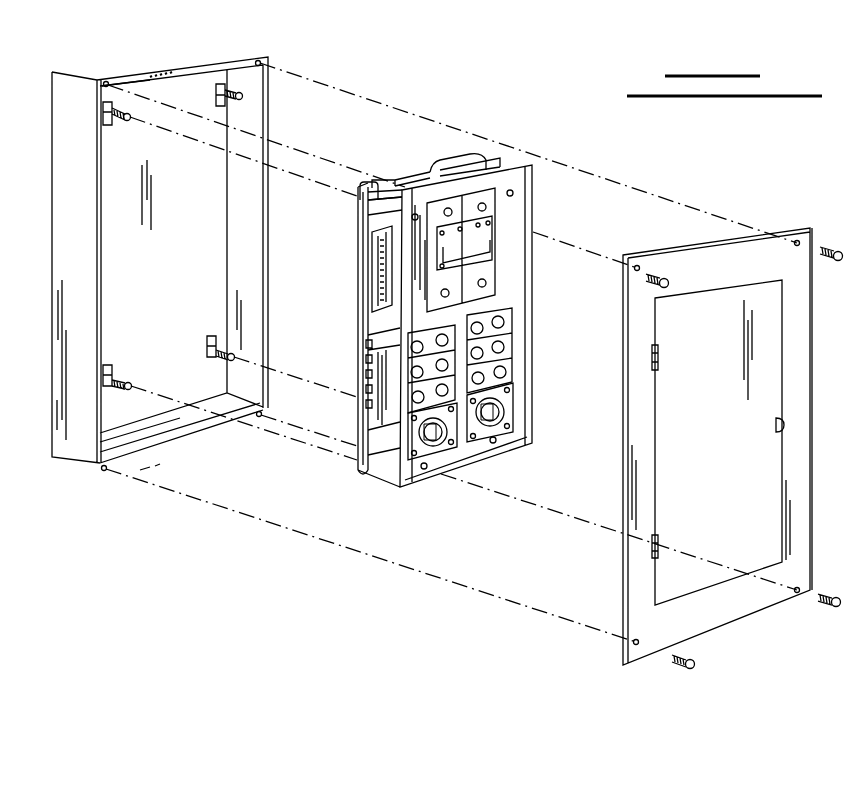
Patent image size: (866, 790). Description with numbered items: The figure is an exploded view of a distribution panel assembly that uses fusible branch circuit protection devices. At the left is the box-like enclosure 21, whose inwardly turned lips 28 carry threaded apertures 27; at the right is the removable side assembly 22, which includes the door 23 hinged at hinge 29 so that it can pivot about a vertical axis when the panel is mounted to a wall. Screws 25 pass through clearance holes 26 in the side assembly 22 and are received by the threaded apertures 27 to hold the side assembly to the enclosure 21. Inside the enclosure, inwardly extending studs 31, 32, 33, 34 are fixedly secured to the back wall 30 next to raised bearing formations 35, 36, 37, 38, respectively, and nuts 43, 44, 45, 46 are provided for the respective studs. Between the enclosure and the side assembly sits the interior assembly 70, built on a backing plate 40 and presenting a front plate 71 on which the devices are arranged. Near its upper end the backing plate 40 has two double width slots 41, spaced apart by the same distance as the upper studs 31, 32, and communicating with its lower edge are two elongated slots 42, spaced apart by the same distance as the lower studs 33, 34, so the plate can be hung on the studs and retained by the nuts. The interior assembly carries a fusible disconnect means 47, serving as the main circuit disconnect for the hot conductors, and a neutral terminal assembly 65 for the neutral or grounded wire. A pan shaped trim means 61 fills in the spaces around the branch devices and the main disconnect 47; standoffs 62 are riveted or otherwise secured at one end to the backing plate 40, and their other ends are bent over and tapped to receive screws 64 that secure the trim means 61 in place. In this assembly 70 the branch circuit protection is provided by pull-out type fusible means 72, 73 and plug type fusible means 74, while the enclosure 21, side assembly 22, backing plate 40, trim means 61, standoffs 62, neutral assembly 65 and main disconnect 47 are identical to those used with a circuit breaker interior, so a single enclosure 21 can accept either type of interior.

The box-like enclosure 21 is at (181, 44).
The removable side assembly 22 is at (797, 222).
The door 23 is at (736, 449).
The screws 25 is at (645, 284).
The clearance holes 26 is at (642, 266).
The threaded apertures 27 is at (106, 82).
The inwardly turned lips 28 is at (160, 78).
The hinge 29 is at (664, 355).
The back wall 30 is at (178, 260).
The upper stud 31 is at (120, 128).
The upper stud 32 is at (228, 88).
The lower stud 33 is at (213, 362).
The lower stud 34 is at (109, 389).
The raised bearing formation 35 is at (103, 119).
The raised bearing formation 36 is at (226, 104).
The raised bearing formation 37 is at (207, 340).
The raised bearing formation 38 is at (110, 368).
The backing plate 40 is at (436, 169).
The double width slots 41 is at (364, 183).
The elongated slots 42 is at (362, 473).
The nut 43 is at (126, 120).
The nut 44 is at (243, 96).
The nut 45 is at (235, 355).
The nut 46 is at (132, 385).
The fusible disconnect means 47 is at (506, 222).
The trim means 61 is at (466, 470).
The standoffs 62 is at (374, 205).
The screws 64 is at (514, 194).
The neutral terminal assembly 65 is at (372, 262).
The distribution panel assembly 70 is at (497, 133).
The front plate 71 is at (540, 210).
The pull-out type fusible means 72 is at (444, 460).
The pull-out type fusible means 73 is at (523, 401).
The plug type fusible means 74 is at (483, 315).